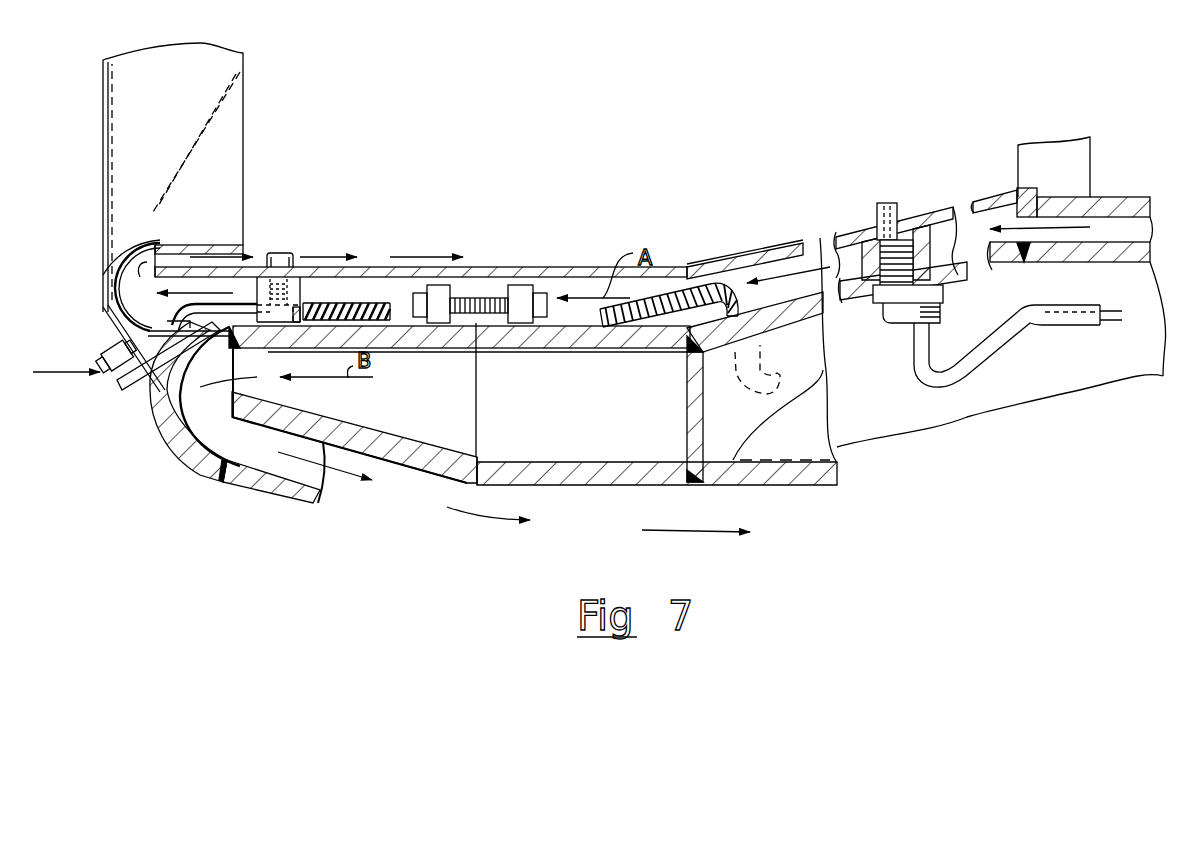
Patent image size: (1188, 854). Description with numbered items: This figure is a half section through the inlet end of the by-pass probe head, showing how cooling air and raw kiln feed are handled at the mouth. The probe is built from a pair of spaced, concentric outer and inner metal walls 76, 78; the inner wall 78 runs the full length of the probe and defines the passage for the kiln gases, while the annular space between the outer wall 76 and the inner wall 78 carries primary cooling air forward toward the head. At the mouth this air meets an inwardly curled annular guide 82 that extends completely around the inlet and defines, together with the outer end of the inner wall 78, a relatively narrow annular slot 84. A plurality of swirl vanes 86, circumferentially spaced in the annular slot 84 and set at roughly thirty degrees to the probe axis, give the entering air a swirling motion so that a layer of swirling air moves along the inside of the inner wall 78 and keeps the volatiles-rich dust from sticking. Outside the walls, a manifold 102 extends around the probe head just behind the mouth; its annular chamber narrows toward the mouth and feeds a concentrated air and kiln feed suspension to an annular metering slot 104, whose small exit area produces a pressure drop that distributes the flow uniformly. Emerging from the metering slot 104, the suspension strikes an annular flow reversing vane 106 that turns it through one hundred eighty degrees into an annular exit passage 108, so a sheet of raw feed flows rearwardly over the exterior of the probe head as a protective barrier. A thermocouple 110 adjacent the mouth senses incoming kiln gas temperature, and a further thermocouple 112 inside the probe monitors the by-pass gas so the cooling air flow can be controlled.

The outer metal wall 76 is at (867, 305).
The inner metal wall 78 is at (780, 247).
The annular guide 82 is at (213, 243).
The annular slot 84 is at (242, 262).
The swirl vanes 86 is at (203, 138).
The manifold 102 is at (624, 488).
The annular metering slot 104 is at (200, 463).
The flow reversing vane 106 is at (207, 457).
The annular exit passage 108 is at (313, 475).
The thermocouple 110 is at (120, 382).
The thermocouple 112 is at (888, 202).